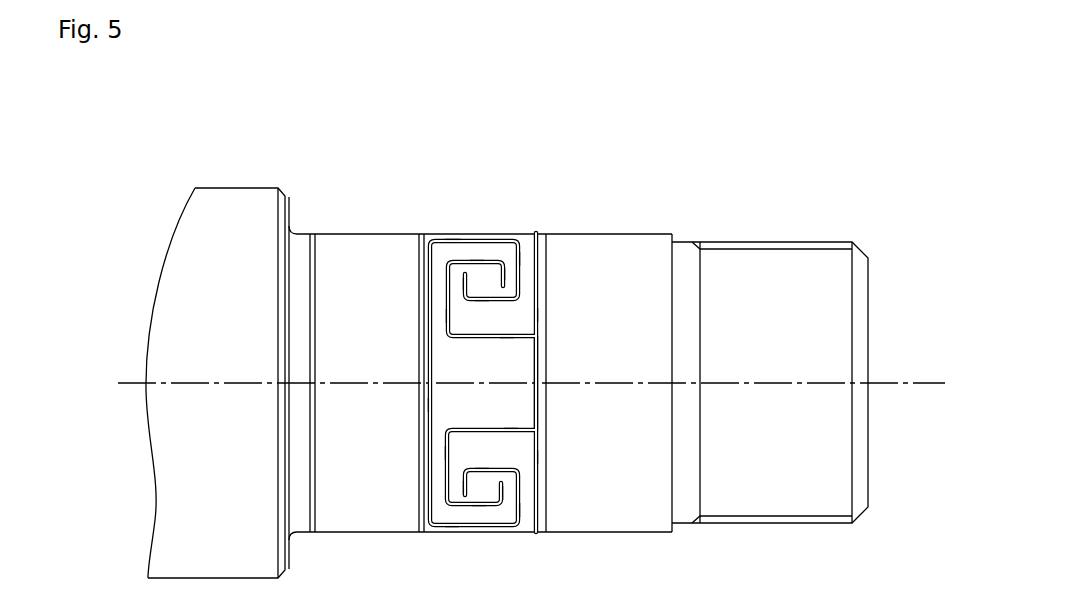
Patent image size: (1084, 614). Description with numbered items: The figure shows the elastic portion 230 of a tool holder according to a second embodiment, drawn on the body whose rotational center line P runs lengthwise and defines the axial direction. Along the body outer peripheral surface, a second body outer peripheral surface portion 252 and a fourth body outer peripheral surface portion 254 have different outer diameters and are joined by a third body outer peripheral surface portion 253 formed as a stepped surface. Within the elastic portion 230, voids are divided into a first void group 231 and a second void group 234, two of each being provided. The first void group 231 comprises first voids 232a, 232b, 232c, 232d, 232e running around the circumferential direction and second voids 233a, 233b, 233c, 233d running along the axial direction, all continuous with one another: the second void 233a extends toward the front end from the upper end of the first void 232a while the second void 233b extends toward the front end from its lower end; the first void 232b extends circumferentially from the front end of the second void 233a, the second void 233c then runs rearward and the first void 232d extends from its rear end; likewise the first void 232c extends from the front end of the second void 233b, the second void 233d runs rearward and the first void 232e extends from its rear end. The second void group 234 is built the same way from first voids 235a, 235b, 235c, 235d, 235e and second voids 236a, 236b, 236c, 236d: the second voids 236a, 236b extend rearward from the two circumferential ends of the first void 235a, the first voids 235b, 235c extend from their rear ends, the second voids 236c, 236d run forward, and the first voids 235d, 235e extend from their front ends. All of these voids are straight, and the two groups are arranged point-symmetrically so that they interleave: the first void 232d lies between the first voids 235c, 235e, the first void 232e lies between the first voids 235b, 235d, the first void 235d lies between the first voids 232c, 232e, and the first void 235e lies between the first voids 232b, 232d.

The rotational center line P is at (521, 387).
The second body outer peripheral surface portion 252 is at (235, 188).
The third body outer peripheral surface portion 253 is at (289, 224).
The fourth body outer peripheral surface portion 254 is at (369, 233).
The elastic portion 230 is at (527, 221).
The first void group 231 is at (408, 364).
The second void group 234 is at (562, 304).
The first void 232a is at (428, 405).
The first void 232b is at (517, 259).
The first void 232c is at (521, 510).
The first void 232d is at (463, 284).
The first void 232e is at (463, 488).
The second void 233a is at (453, 241).
The second void 233b is at (452, 531).
The second void 233c is at (482, 300).
The second void 233d is at (482, 468).
The first void 235a is at (539, 315).
The first void 235b is at (446, 453).
The first void 235c is at (446, 316).
The first void 235d is at (504, 493).
The first void 235e is at (505, 274).
The second void 236a is at (511, 428).
The second void 236b is at (507, 341).
The second void 236c is at (479, 506).
The second void 236d is at (477, 262).